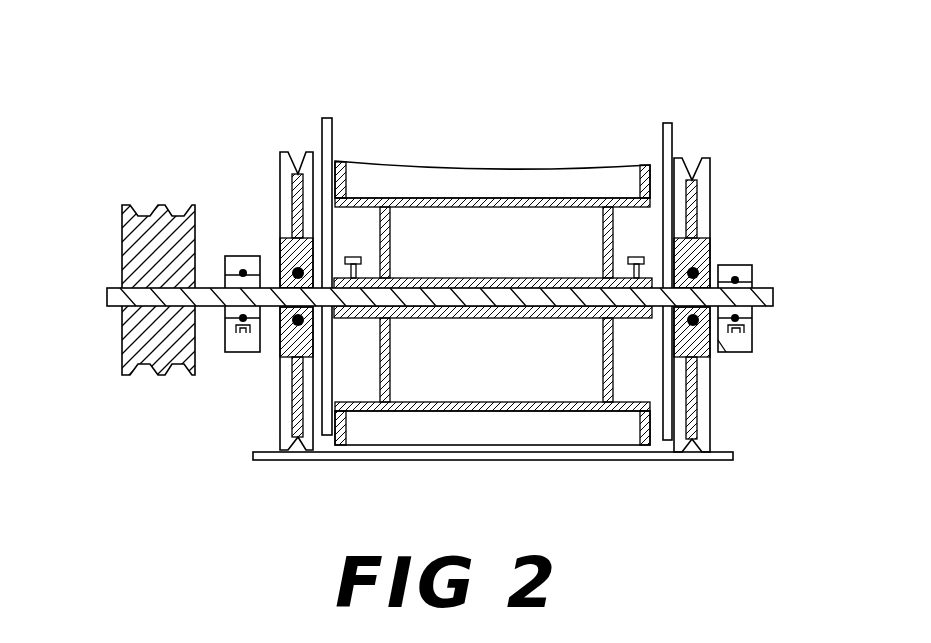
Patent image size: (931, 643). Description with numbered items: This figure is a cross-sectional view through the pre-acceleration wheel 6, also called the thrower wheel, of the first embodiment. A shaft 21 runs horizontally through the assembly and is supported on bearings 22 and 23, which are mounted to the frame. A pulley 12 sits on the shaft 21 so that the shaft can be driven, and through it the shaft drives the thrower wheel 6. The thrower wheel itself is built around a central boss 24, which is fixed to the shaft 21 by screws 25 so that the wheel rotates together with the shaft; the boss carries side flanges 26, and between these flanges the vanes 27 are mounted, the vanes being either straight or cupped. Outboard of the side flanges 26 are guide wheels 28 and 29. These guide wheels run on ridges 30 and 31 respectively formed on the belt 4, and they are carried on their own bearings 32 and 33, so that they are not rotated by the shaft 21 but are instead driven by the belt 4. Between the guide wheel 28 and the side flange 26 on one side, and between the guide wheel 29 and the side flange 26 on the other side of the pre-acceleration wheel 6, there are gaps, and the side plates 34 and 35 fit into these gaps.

The belt 4 is at (355, 458).
The pre-acceleration wheel 6 is at (591, 268).
The pulley 12 is at (128, 253).
The shaft 21 is at (112, 293).
The bearing 22 is at (740, 352).
The bearing 23 is at (244, 259).
The central boss 24 is at (563, 283).
The screws 25 is at (355, 257).
The side flanges 26 is at (340, 162).
The vanes 27 is at (458, 178).
The guide wheel 28 is at (292, 212).
The guide wheel 29 is at (712, 200).
The ridge 30 is at (293, 449).
The ridge 31 is at (691, 455).
The bearing 32 is at (284, 334).
The bearing 33 is at (716, 338).
The side plate 34 is at (322, 135).
The side plate 35 is at (673, 150).